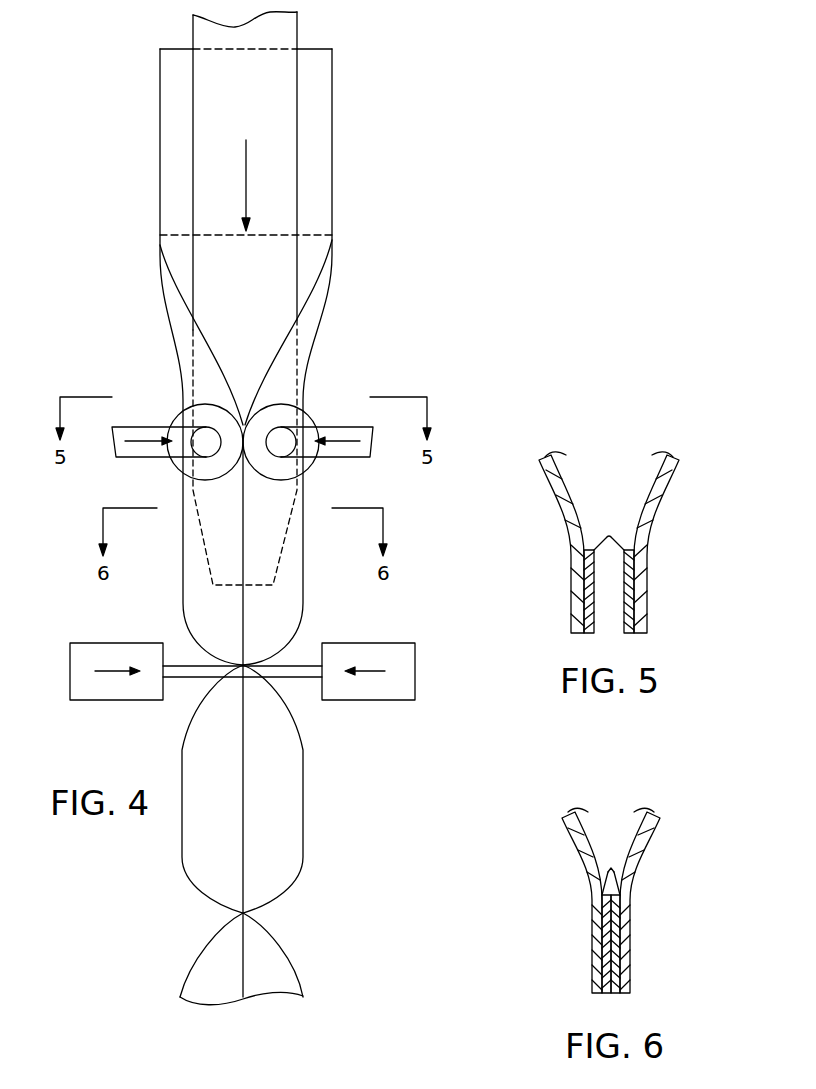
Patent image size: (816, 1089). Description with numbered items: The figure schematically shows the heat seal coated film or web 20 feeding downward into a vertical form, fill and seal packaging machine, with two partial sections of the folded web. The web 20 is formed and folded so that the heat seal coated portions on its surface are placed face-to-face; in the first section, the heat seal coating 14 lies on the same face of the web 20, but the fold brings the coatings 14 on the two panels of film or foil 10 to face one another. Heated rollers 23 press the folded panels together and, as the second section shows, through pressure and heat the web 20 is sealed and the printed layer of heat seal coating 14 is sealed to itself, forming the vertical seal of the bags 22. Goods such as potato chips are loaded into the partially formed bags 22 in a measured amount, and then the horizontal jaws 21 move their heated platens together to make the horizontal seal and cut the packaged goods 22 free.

In FIG. 5, the packaging film or foil 10 is at (565, 520).
In FIG. 6, the packaging film or foil 10 is at (589, 866).
In FIG. 5, the heat seal coating 14 is at (609, 536).
In FIG. 6, the heat seal coating 14 is at (611, 868).
In FIG. 4, the coated web 20 is at (332, 80).
In FIG. 5, the coated web 20 is at (580, 609).
In FIG. 6, the coated web 20 is at (596, 963).
In FIG. 4, the horizontal jaws 21 is at (373, 643).
In FIG. 4, the bags 22 is at (300, 788).
In FIG. 4, the heated rollers 23 is at (287, 405).